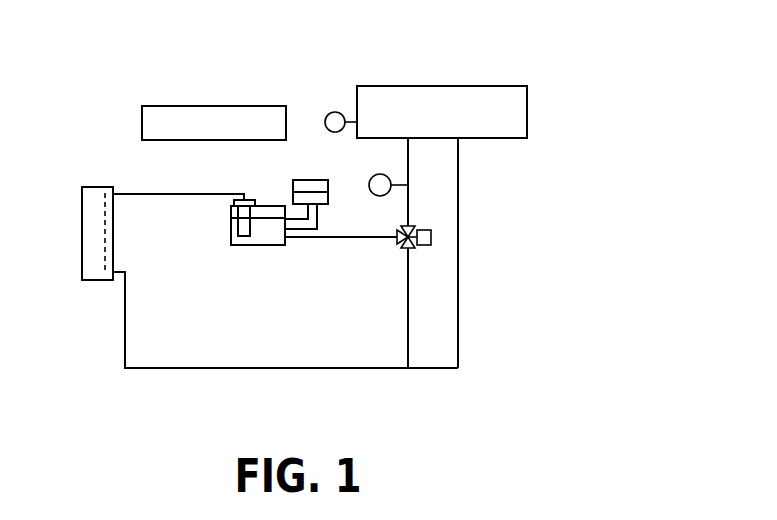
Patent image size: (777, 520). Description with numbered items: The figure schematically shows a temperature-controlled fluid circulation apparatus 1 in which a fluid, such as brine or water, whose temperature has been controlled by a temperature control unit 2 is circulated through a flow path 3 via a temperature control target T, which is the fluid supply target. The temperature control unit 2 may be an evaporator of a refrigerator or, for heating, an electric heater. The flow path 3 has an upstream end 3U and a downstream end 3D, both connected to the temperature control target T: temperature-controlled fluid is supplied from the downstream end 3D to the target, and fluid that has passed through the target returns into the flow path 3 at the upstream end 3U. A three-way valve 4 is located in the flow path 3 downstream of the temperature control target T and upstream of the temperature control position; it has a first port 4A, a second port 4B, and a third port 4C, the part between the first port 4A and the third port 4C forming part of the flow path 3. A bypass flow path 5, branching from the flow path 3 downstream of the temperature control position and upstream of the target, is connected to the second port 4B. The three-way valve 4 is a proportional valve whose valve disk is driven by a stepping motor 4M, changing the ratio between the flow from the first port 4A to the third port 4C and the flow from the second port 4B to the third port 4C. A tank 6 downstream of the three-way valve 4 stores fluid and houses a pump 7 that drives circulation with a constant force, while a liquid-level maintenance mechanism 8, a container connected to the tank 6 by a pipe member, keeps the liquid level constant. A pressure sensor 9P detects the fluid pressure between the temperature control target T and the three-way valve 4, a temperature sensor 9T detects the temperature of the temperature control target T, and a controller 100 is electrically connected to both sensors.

The temperature-controlled fluid circulation apparatus 1 is at (553, 67).
The temperature control unit 2 is at (82, 208).
The flow path 3 is at (198, 370).
The upstream end 3U is at (407, 144).
The downstream end 3D is at (460, 142).
The three-way valve 4 is at (429, 245).
The first port 4A is at (412, 224).
The second port 4B is at (404, 250).
The third port 4C is at (397, 243).
The stepping motor 4M is at (432, 238).
The bypass flow path 5 is at (407, 342).
The tank 6 is at (231, 239).
The pump 7 is at (246, 228).
The liquid-level maintenance mechanism 8 is at (293, 186).
The pressure sensor 9P is at (372, 194).
The temperature sensor 9T is at (335, 111).
The controller 100 is at (178, 105).
The temperature control target T is at (437, 86).